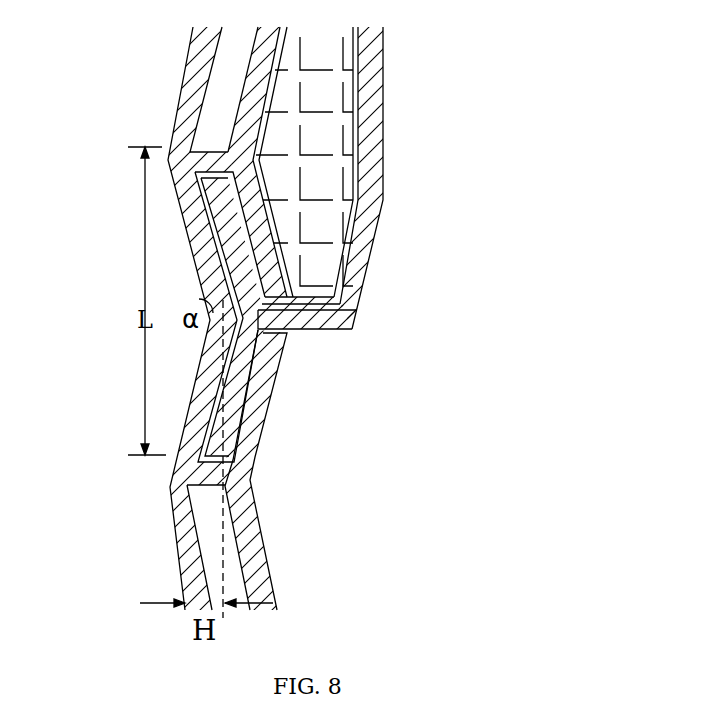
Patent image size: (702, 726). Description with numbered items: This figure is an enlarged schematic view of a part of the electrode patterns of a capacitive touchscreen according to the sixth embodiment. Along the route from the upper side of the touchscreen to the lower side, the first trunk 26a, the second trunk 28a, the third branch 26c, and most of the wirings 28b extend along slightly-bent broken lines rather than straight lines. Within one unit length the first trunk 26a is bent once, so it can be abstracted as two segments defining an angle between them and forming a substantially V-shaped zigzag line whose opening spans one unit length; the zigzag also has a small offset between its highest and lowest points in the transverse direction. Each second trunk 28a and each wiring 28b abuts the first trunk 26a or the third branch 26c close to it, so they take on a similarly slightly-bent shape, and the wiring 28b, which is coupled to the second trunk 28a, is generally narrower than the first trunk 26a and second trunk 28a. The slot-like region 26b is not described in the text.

The first trunk 26a is at (205, 292).
The slot in first housing member 26b is at (205, 150).
The third branch 26c is at (250, 105).
The second trunk 28a is at (262, 393).
The wiring 28b is at (370, 117).